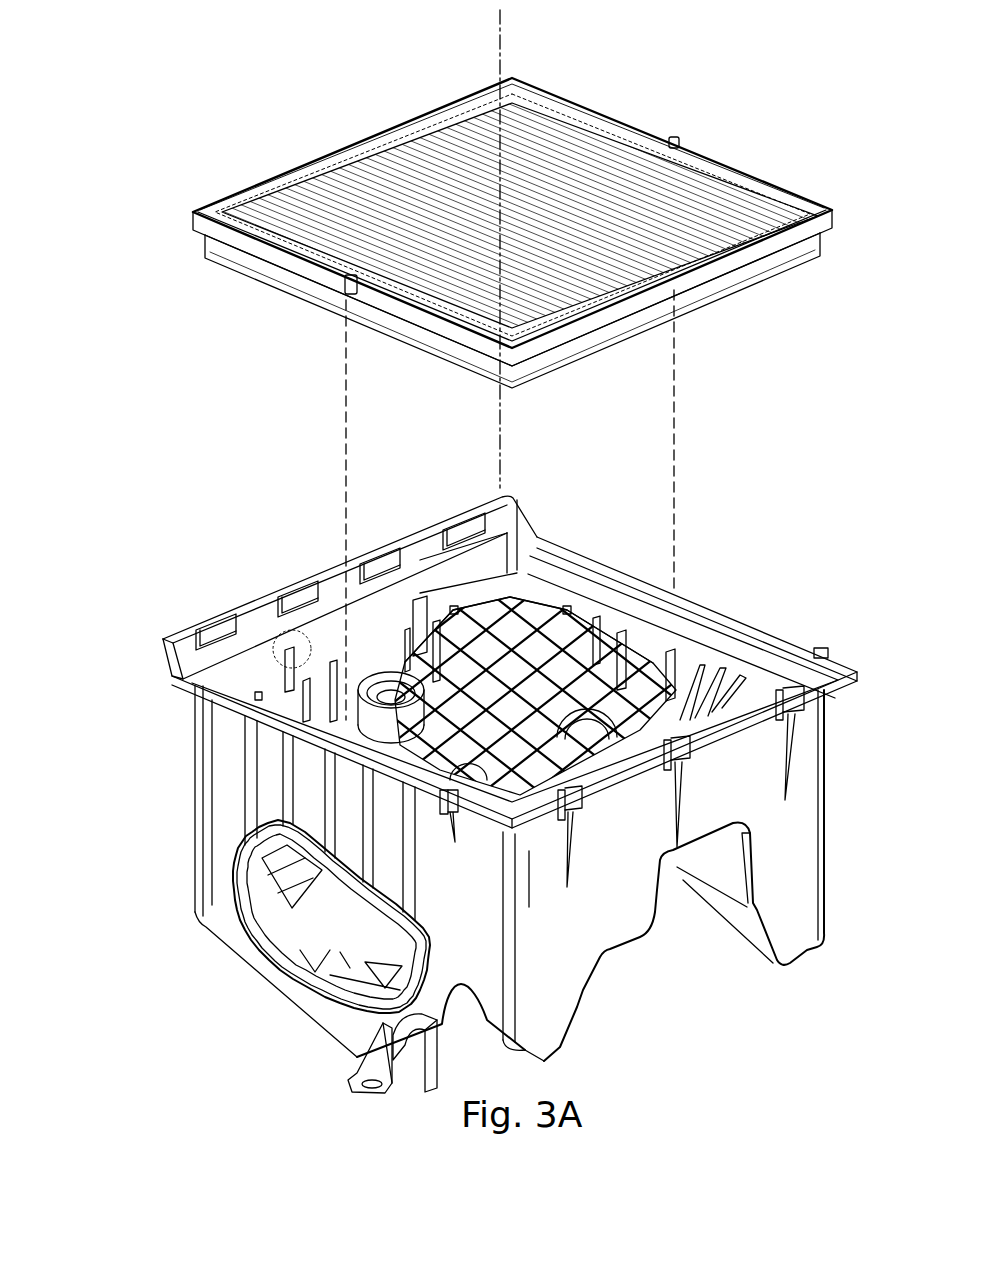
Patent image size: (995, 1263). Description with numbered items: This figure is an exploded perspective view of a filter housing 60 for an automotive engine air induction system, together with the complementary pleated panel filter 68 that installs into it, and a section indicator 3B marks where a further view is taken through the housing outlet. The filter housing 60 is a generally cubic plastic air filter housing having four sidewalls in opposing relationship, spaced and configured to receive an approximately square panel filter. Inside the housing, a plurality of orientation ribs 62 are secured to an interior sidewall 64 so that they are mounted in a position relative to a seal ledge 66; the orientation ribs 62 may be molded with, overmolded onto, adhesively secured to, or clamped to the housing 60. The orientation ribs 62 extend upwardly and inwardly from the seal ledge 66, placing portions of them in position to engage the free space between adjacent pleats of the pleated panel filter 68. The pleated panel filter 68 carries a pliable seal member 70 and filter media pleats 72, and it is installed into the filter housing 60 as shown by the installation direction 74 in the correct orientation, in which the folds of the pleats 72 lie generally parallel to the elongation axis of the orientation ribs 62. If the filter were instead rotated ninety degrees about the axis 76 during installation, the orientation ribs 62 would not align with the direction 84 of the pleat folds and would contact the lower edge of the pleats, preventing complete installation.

The filter housing 60 is at (582, 931).
The orientation ribs 62 is at (423, 596).
The interior sidewall 64 is at (358, 664).
The seal ledge 66 is at (258, 692).
The pleated panel filter 68 is at (471, 222).
The pliable seal member 70 is at (193, 221).
The filter media pleats 72 is at (594, 142).
The installation direction 74 is at (675, 398).
The axis 76 is at (504, 38).
The direction of the pleat folds 84 is at (324, 96).
The outlet section indicator 3B is at (233, 720).